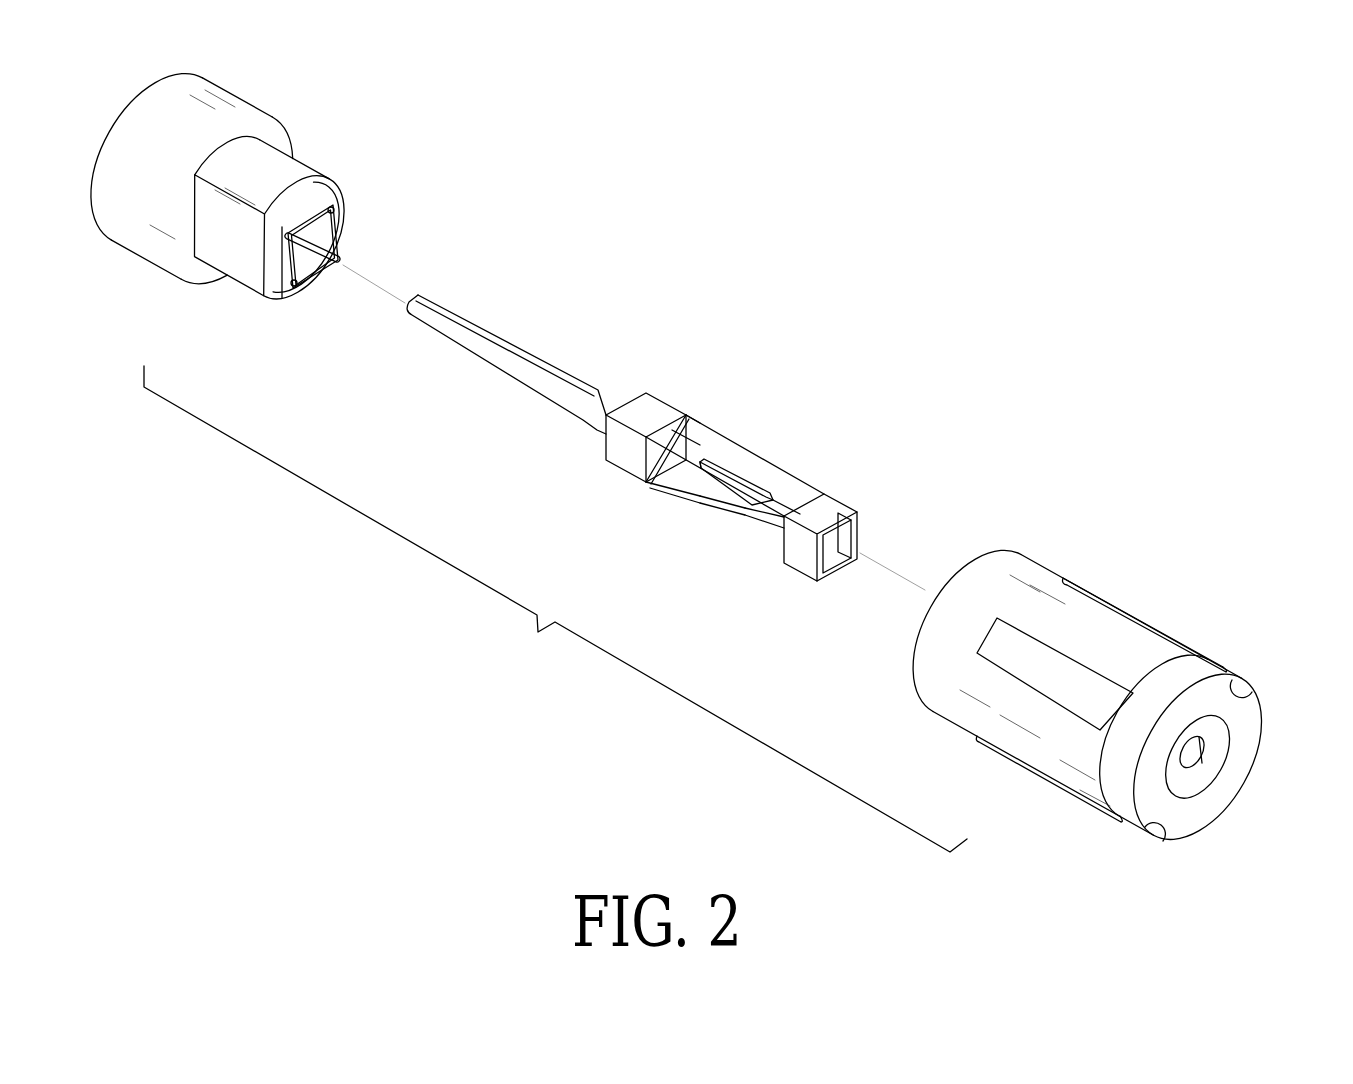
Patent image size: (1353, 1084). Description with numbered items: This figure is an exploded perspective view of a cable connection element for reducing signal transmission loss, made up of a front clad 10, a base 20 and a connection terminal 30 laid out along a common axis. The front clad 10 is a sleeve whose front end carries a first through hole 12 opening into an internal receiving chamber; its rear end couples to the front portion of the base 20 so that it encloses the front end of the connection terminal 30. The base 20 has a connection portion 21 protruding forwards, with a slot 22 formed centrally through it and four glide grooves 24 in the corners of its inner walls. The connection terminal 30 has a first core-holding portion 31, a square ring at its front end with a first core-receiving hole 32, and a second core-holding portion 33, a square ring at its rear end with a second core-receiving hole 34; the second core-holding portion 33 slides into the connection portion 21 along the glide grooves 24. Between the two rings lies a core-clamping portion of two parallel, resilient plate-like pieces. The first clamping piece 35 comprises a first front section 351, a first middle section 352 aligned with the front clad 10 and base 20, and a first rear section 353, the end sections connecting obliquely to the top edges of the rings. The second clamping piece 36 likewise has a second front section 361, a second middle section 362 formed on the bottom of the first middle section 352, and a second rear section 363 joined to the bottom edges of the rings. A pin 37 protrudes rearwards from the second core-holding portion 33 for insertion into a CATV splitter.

The front clad 10 is at (1027, 575).
The first through hole 12 is at (1202, 747).
The base 20 is at (237, 101).
The connection portion 21 is at (247, 283).
The slot 22 is at (338, 242).
The glide grooves 24 is at (311, 237).
The connection terminal 30 is at (762, 397).
The first core-holding portion 31 is at (802, 567).
The first core-receiving hole 32 is at (858, 548).
The second core-holding portion 33 is at (612, 453).
The second core-receiving hole 34 is at (645, 479).
The first clamping piece 35 is at (760, 477).
The first front section 351 is at (803, 495).
The first middle section 352 is at (732, 463).
The first rear section 353 is at (690, 430).
The second clamping piece 36 is at (685, 532).
The second front section 361 is at (765, 525).
The second middle section 362 is at (705, 495).
The second rear section 363 is at (662, 492).
The pin 37 is at (448, 330).